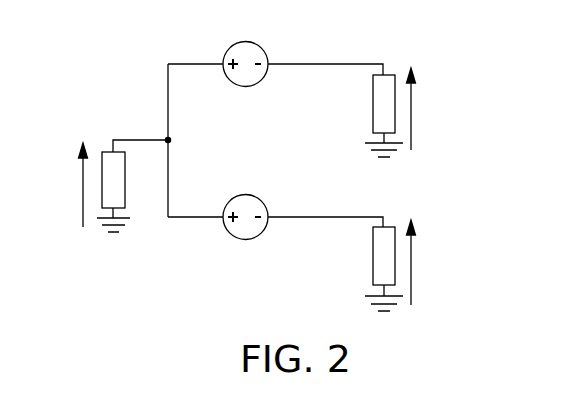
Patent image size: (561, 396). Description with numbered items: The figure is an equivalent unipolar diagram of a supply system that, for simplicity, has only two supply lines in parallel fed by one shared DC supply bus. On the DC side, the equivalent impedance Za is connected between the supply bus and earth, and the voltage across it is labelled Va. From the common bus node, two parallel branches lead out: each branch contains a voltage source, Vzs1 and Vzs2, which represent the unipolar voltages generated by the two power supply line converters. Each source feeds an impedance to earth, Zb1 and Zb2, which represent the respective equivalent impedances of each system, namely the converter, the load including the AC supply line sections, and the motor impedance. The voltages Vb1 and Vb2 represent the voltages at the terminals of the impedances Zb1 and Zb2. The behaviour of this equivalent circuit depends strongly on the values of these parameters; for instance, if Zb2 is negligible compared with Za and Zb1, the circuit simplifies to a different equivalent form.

The input voltage Va is at (64, 185).
The equivalent impedance between the supply bus and earth Za is at (127, 192).
The unipolar voltage generated by the first power supply line converter Vzs1 is at (244, 46).
The unipolar voltage generated by the second power supply line converter Vzs2 is at (244, 202).
The equivalent impedance of the first supply line system Zb1 is at (365, 116).
The equivalent impedance of the second supply line system Zb2 is at (365, 269).
The voltage at the Zb1 impedance terminals Vb1 is at (433, 109).
The voltage at the Zb2 impedance terminals Vb2 is at (433, 262).